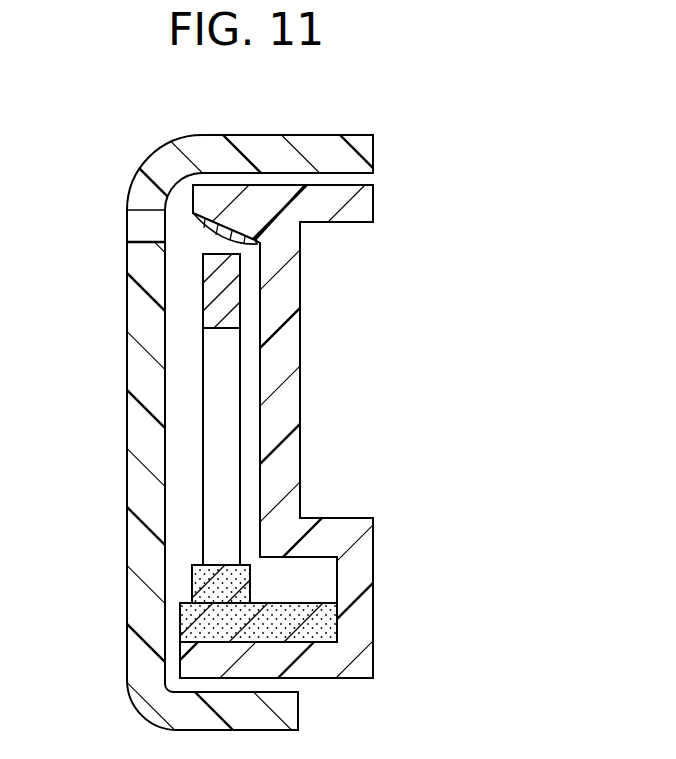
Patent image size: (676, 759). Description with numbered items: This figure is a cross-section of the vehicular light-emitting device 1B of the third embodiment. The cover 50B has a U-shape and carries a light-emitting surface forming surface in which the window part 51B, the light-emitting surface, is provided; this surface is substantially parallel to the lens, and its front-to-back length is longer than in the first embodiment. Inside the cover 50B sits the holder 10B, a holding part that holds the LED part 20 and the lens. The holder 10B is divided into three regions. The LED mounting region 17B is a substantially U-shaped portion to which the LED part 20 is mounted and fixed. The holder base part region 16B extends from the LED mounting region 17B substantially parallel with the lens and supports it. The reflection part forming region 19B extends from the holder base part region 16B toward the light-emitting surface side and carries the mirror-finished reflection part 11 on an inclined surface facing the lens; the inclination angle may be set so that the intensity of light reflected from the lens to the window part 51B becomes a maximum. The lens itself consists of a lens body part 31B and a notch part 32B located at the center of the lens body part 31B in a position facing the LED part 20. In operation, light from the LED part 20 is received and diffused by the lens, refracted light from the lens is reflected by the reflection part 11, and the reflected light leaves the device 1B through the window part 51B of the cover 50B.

The vehicular light-emitting device 1B is at (505, 139).
The holder 10B is at (448, 186).
The reflection part 11 is at (200, 222).
The holder base part region 16B is at (280, 412).
The LED mounting region 17B is at (362, 575).
The reflection part forming region 19B is at (373, 205).
The LED part 20 is at (188, 623).
The lens body part 31B is at (213, 291).
The notch part 32B is at (203, 502).
The cover 50B is at (140, 373).
The window part 51B is at (150, 240).